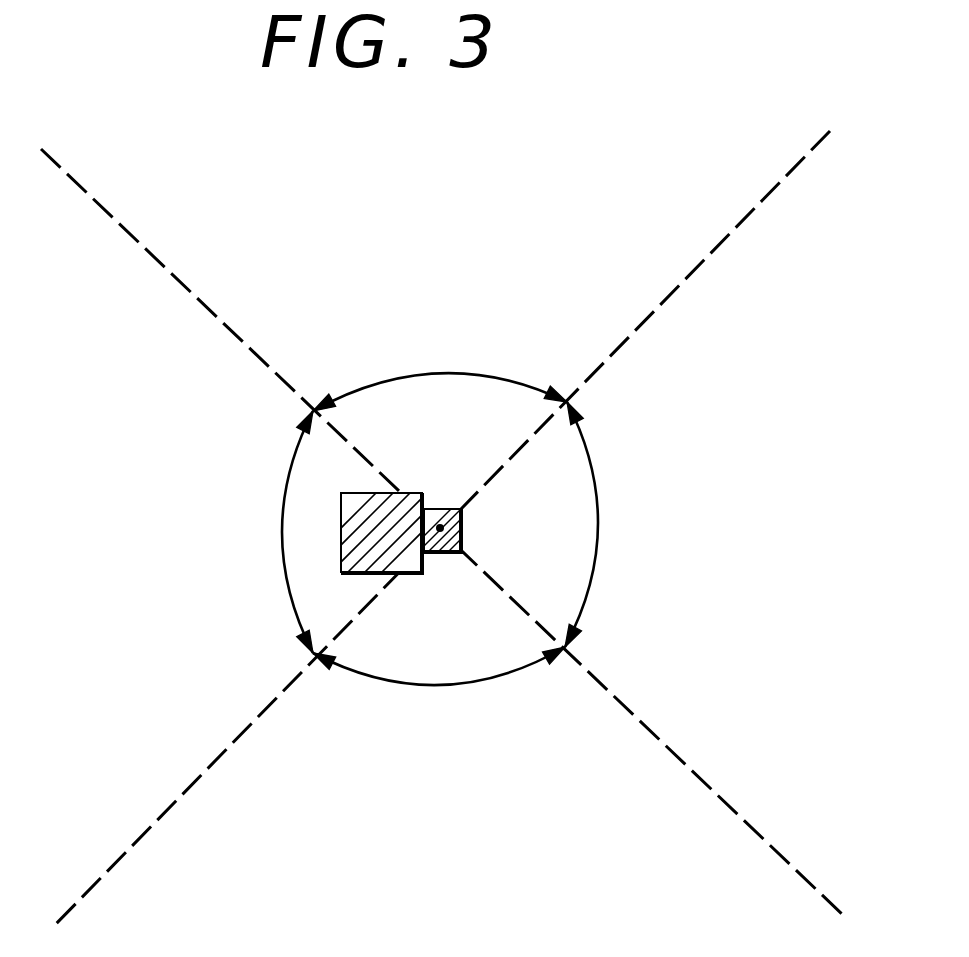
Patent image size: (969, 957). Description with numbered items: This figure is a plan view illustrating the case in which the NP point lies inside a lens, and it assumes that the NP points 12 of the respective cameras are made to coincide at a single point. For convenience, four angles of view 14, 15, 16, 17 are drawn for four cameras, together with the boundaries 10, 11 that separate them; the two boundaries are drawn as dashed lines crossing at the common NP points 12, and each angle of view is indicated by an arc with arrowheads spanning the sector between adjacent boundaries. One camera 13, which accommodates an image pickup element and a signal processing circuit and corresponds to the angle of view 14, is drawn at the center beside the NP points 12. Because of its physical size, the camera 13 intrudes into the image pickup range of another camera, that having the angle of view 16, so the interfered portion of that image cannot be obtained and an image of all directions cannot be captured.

The boundary 10 is at (730, 228).
The boundary 11 is at (680, 753).
The NP point 12 is at (440, 528).
The camera 13 is at (363, 518).
The angle of view 14 is at (598, 532).
The angle of view 15 is at (445, 688).
The angle of view 16 is at (282, 545).
The angle of view 17 is at (438, 372).